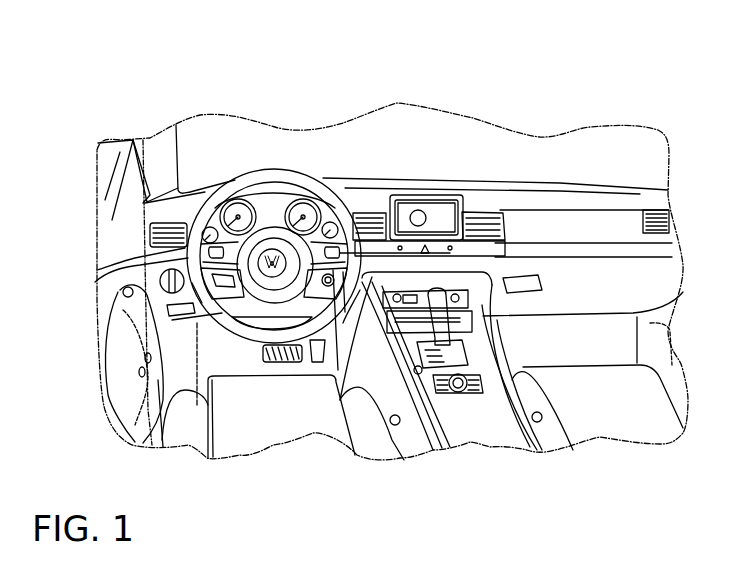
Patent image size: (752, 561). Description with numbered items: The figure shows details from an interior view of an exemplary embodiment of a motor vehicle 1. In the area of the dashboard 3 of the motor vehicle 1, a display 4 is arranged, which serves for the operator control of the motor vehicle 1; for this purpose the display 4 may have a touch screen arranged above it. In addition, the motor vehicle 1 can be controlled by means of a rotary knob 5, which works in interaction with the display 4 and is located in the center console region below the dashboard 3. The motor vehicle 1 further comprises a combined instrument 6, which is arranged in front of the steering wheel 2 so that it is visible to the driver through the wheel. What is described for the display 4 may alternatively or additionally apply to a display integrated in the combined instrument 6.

The motor vehicle 1 is at (612, 98).
The steering wheel 2 is at (297, 178).
The dashboard 3 is at (550, 193).
The display 4 is at (433, 216).
The rotary knob 5 is at (462, 383).
The combined instrument 6 is at (265, 197).